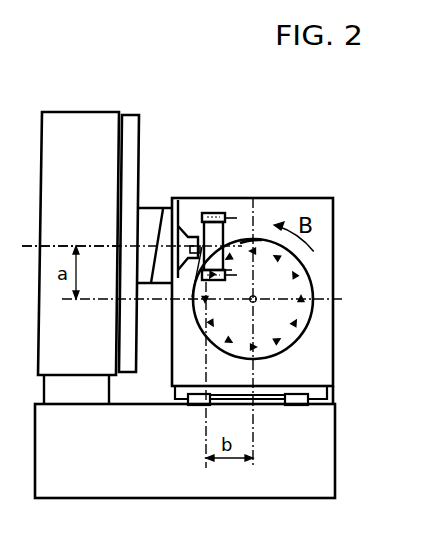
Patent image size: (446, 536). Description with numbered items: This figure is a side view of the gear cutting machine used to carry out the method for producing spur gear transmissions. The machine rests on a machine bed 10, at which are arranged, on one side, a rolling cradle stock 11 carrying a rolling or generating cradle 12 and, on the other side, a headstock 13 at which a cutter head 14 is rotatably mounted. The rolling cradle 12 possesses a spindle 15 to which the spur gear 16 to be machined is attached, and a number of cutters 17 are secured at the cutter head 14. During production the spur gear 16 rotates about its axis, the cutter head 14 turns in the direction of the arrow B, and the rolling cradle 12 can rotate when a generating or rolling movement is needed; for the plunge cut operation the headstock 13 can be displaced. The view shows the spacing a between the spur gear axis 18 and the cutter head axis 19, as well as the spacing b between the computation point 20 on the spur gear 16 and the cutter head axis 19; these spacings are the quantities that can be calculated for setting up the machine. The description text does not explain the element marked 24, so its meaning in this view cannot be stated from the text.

The machine bed 10 is at (326, 449).
The rolling cradle stock 11 is at (83, 118).
The rolling cradle 12 is at (133, 125).
The headstock 13 is at (291, 206).
The cutter head 14 is at (300, 339).
The spindle 15 is at (197, 241).
The spur gear 16 is at (215, 214).
The cutters 17 is at (298, 326).
The spur gear axis 18 is at (238, 241).
The cutter head axis 19 is at (257, 298).
The computation point 20 is at (229, 270).
The axis 24 is at (88, 246).